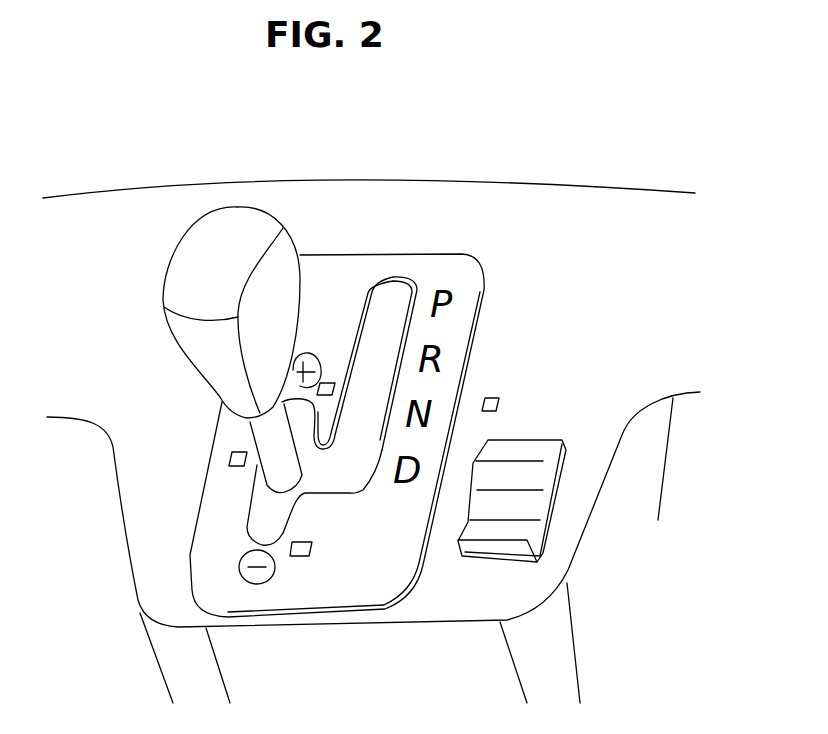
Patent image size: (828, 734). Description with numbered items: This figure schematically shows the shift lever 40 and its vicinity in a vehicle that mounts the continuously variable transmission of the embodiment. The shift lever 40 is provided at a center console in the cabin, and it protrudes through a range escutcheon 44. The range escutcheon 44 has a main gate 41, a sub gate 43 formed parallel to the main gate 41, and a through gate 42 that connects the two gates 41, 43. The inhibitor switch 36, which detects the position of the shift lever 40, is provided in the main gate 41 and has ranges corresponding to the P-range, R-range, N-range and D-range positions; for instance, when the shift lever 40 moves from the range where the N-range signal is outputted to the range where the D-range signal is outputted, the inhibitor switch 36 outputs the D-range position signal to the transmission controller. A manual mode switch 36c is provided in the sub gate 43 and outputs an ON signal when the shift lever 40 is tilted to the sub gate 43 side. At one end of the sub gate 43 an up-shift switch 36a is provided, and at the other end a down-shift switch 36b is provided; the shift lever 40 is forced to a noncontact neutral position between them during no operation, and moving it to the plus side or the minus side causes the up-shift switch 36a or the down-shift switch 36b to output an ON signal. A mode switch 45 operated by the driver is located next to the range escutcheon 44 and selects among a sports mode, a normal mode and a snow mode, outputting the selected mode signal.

The shift lever 40 is at (210, 230).
The main gate 41 is at (396, 294).
The through gate 42 is at (335, 480).
The sub gate 43 is at (268, 508).
The range escutcheon 44 is at (353, 268).
The mode switch 45 is at (523, 453).
The inhibitor switch 36 is at (490, 397).
The up-shift switch 36a is at (331, 382).
The down-shift switch 36b is at (300, 557).
The manual mode switch 36c is at (227, 460).